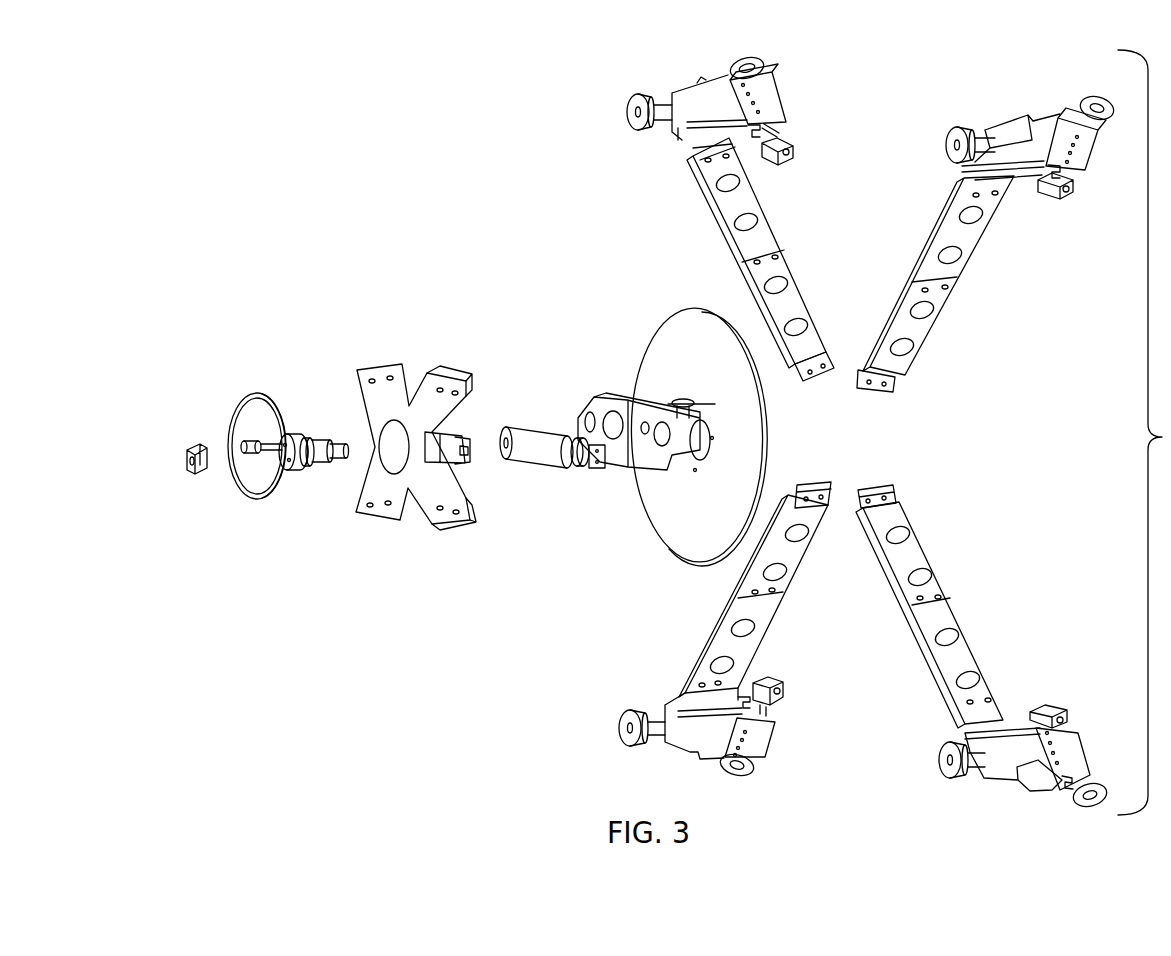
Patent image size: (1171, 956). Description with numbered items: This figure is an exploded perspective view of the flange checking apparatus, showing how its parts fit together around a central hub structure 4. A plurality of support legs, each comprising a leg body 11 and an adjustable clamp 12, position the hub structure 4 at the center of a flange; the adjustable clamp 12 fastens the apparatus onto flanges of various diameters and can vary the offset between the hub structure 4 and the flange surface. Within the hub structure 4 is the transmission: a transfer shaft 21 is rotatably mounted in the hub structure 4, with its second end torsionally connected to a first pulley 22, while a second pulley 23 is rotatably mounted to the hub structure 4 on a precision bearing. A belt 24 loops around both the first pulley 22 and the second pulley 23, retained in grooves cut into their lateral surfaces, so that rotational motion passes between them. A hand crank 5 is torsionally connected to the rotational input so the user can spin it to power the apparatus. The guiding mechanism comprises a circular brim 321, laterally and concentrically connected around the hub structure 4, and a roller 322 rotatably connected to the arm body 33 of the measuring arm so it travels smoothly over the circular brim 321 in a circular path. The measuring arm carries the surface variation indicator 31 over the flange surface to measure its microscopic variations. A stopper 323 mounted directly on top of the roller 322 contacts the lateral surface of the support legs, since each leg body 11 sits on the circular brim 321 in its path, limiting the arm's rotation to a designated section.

The hub structure 4 is at (363, 383).
The hand crank 5 is at (190, 470).
The leg body 11 is at (786, 268).
The adjustable clamp 12 is at (704, 82).
The transfer shaft 21 is at (330, 440).
The first pulley 22 is at (306, 468).
The second pulley 23 is at (232, 418).
The belt 24 is at (292, 433).
The surface variation indicator 31 is at (678, 402).
The arm body 33 is at (613, 397).
The circular brim 321 is at (692, 310).
The roller 322 is at (585, 470).
The stopper 323 is at (568, 432).